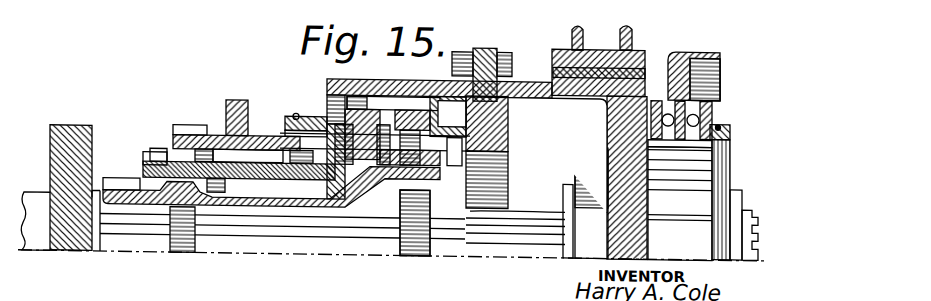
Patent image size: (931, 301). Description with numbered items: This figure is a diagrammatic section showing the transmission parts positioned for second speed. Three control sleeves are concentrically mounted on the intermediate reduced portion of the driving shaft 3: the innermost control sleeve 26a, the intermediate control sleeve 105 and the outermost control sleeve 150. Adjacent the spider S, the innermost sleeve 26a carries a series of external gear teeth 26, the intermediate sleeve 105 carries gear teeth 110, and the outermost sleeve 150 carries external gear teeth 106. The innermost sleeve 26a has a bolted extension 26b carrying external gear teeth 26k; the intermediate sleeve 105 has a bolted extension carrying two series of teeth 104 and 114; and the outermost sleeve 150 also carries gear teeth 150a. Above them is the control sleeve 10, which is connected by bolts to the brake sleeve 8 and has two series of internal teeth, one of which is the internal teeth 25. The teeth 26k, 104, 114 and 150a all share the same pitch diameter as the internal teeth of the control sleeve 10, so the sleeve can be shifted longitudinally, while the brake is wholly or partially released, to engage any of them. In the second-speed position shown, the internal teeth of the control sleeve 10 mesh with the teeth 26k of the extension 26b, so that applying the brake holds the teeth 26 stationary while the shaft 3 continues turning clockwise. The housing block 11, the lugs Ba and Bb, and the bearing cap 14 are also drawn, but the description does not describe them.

The spider S is at (69, 132).
The external gear teeth 26 is at (117, 184).
The innermost control sleeve 26a is at (313, 210).
The extension 26b is at (470, 110).
The external gear teeth 26k is at (497, 86).
The intermediate control sleeve 105 is at (257, 175).
The gear teeth 110 is at (153, 156).
The external gear teeth 106 is at (188, 128).
The outermost control sleeve 150 is at (262, 137).
The gear teeth 150a is at (238, 103).
The internal teeth 25 is at (330, 100).
The control sleeve 10 is at (405, 81).
The external gear teeth 114 is at (364, 105).
The external gear teeth 104 is at (451, 116).
The housing block 11 is at (603, 48).
The lug Ba is at (588, 19).
The lug Bb is at (628, 33).
The bearing cap 14 is at (695, 61).
The brake sleeve 8 is at (640, 206).
The driving shaft 3 is at (750, 208).